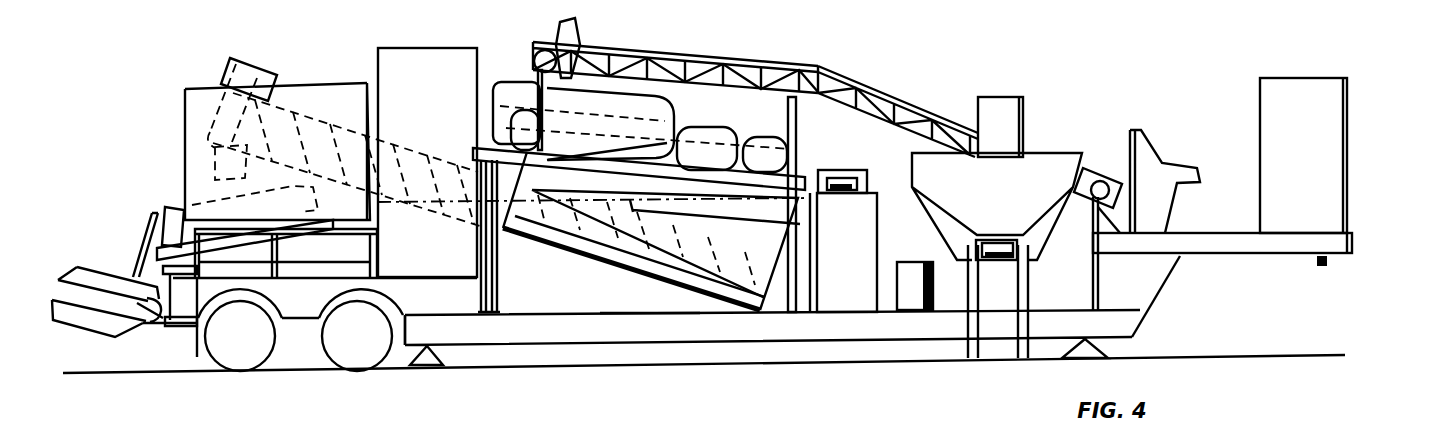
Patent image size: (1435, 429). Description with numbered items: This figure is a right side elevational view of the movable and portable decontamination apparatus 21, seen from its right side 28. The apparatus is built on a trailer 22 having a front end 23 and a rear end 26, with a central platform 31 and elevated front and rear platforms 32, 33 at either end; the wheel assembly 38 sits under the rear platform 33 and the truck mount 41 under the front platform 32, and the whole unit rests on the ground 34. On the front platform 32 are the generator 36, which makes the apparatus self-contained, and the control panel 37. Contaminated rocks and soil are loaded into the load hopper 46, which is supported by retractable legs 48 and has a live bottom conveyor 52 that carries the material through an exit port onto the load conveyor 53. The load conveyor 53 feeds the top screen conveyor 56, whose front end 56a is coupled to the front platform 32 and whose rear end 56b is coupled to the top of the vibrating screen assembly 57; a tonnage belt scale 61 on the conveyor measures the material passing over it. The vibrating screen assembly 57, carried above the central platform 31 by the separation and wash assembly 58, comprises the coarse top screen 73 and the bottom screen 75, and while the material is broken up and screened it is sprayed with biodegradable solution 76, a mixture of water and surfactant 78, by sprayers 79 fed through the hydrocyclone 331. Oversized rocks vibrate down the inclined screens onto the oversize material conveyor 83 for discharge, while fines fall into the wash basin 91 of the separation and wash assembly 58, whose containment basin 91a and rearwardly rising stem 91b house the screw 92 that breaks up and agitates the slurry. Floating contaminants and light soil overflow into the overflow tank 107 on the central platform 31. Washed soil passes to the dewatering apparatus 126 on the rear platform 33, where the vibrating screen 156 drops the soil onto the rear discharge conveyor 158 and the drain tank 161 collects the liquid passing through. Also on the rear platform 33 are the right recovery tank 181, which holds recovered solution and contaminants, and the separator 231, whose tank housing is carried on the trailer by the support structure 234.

The decontamination apparatus 21 is at (1370, 156).
The trailer 22 is at (546, 350).
The front end 23 is at (1357, 254).
The rear end 26 is at (170, 330).
The right side 28 is at (1140, 314).
The central platform 31 is at (528, 312).
The front platform 32 is at (1238, 243).
The rear platform 33 is at (404, 272).
The ground 34 is at (1270, 355).
The generator 36 is at (1290, 168).
The control panel 37 is at (1143, 145).
The wheel assembly 38 is at (253, 357).
The truck mount 41 is at (1318, 262).
The load hopper 46 is at (986, 196).
The retractable legs 48 is at (975, 350).
The live bottom conveyor 52 is at (1010, 258).
The load conveyor 53 is at (1003, 102).
The top screen conveyor 56 is at (838, 70).
The front end of top screen conveyor 56a is at (1100, 175).
The rear end of top screen conveyor 56b is at (578, 36).
The vibrating screen assembly 57 is at (496, 76).
The separation and wash assembly 58 is at (646, 318).
The tonnage belt scale 61 is at (905, 97).
The top screen 73 is at (754, 90).
The bottom screen 75 is at (718, 60).
The biodegradable solution 76 is at (640, 272).
The biodegradable surfactant 78 is at (912, 265).
The sprayers 79 is at (665, 58).
The oversize material conveyor 83 is at (848, 168).
The wash basin 91 is at (696, 306).
The containment basin 91a is at (727, 255).
The stem 91b is at (268, 76).
The screw 92 is at (207, 150).
The overflow tank 107 is at (829, 245).
The dewatering apparatus 126 is at (175, 204).
The vibrating screen 156 is at (348, 223).
The rear discharge conveyor 158 is at (95, 332).
The drain tank 161 is at (212, 272).
The right recovery tank 181 is at (416, 101).
The separator 231 is at (348, 84).
The support structure 234 is at (371, 227).
The hydrocyclone 331 is at (560, 28).